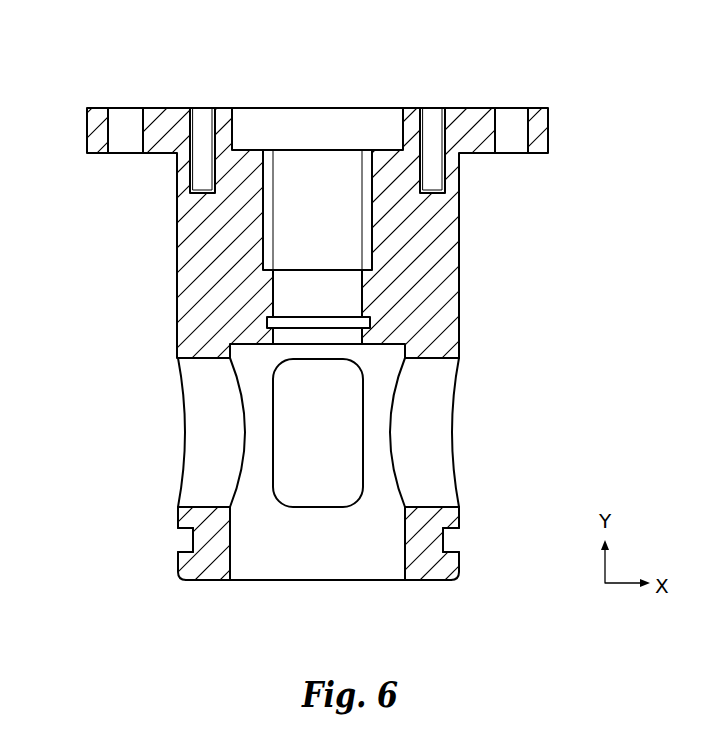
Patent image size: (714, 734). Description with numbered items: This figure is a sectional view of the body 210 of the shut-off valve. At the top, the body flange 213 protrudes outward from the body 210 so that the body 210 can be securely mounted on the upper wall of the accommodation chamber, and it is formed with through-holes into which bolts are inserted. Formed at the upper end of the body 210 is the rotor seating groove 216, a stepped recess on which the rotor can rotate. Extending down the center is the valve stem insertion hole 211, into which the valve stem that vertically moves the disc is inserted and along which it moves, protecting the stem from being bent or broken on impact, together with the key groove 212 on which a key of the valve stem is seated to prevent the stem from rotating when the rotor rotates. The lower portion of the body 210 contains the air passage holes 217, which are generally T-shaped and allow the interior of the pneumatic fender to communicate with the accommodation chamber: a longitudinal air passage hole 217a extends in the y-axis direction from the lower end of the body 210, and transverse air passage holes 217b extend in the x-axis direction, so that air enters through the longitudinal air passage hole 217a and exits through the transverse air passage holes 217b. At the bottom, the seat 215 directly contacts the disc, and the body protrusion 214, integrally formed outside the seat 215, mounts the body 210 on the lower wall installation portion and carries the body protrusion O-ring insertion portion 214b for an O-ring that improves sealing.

The body 210 is at (158, 90).
The valve stem insertion hole 211 is at (320, 296).
The key groove 212 is at (368, 235).
The body flange 213 is at (537, 130).
The body protrusion 214 is at (445, 565).
The body protrusion O-ring insertion portion 214b is at (445, 540).
The seat 215 is at (420, 567).
The rotor seating groove 216 is at (320, 127).
The air passage holes 217 is at (92, 470).
The longitudinal air passage hole 217a is at (265, 545).
The transverse air passage hole 217b is at (202, 475).